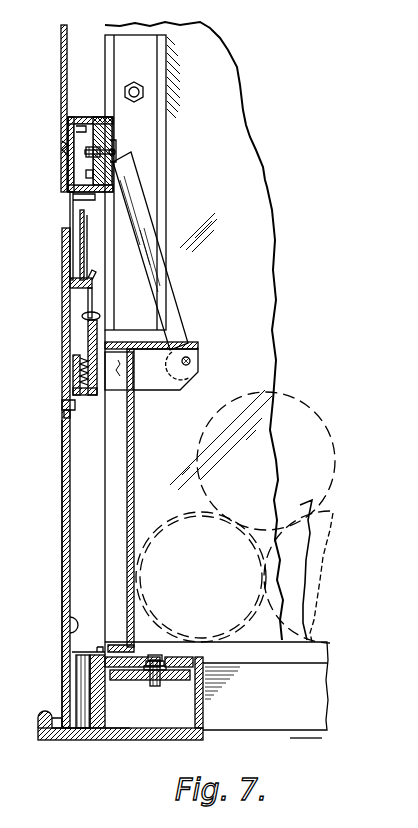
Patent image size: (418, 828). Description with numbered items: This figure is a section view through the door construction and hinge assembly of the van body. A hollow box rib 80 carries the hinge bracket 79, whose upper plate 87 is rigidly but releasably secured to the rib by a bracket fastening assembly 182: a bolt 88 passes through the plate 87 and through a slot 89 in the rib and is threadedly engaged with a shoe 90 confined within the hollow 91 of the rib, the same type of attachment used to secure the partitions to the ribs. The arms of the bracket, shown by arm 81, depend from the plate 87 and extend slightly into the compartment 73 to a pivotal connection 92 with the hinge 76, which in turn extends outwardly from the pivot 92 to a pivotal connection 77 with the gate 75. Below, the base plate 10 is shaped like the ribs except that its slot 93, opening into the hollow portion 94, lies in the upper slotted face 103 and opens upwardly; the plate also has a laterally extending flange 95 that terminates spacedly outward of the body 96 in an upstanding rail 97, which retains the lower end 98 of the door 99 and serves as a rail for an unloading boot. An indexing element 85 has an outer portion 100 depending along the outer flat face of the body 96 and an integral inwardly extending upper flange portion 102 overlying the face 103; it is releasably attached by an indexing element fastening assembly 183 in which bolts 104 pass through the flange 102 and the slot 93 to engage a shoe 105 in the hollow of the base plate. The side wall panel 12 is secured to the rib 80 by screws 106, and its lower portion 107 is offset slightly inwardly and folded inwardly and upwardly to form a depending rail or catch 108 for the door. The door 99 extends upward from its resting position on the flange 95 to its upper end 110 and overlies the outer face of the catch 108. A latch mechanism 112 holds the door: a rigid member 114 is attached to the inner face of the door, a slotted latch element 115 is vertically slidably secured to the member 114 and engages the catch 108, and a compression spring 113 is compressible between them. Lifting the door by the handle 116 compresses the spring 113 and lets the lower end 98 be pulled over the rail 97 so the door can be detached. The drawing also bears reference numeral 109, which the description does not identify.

The base plate 10 is at (205, 714).
The side wall panel 12 is at (60, 105).
The compartment 73 is at (133, 450).
The gate 75 is at (135, 522).
The hinge 76 is at (166, 388).
The pivotal connection 77 is at (134, 378).
The bracket 79 is at (178, 257).
The hollow box rib 80 is at (68, 121).
The arm 81 is at (180, 295).
The indexing element 85 is at (85, 653).
The upper plate 87 is at (114, 149).
The bolt 88 is at (115, 152).
The slot 89 is at (117, 140).
The shoe 90 is at (87, 117).
The hollow 91 is at (76, 128).
The pivotal connection 92 is at (192, 361).
The slot 93 is at (165, 680).
The hollow portion 94 is at (160, 740).
The laterally extending flange 95 is at (66, 740).
The body 96 is at (122, 740).
The upstanding rail 97 is at (40, 716).
The lower end 98 is at (60, 710).
The door 99 is at (62, 589).
The outer portion 100 is at (86, 680).
The upper flange portion 102 is at (130, 660).
The upper slotted face 103 is at (150, 660).
The bolts 104 is at (165, 660).
The shoe 105 is at (208, 688).
The screws 106 is at (62, 146).
The lower portion 107 is at (70, 214).
The catch 108 is at (80, 226).
The slide 109 is at (72, 200).
The upper end 110 is at (62, 249).
The latch mechanism 112 is at (72, 359).
The compression spring 113 is at (78, 376).
The rigid member 114 is at (62, 403).
The slotted latch element 115 is at (68, 291).
The handle 116 is at (62, 625).
The bracket fastening assembly 182 is at (87, 174).
The indexing element fastening assembly 183 is at (140, 680).